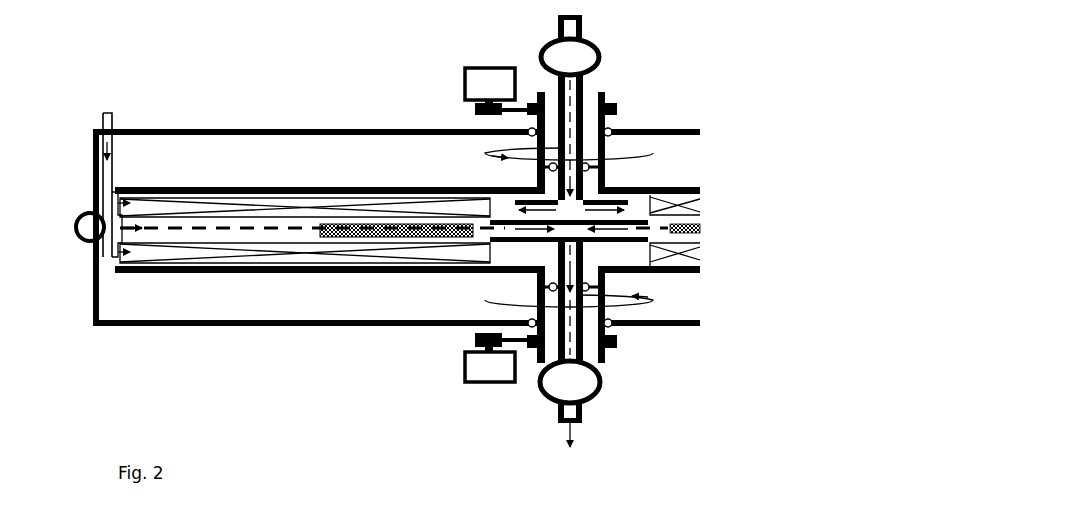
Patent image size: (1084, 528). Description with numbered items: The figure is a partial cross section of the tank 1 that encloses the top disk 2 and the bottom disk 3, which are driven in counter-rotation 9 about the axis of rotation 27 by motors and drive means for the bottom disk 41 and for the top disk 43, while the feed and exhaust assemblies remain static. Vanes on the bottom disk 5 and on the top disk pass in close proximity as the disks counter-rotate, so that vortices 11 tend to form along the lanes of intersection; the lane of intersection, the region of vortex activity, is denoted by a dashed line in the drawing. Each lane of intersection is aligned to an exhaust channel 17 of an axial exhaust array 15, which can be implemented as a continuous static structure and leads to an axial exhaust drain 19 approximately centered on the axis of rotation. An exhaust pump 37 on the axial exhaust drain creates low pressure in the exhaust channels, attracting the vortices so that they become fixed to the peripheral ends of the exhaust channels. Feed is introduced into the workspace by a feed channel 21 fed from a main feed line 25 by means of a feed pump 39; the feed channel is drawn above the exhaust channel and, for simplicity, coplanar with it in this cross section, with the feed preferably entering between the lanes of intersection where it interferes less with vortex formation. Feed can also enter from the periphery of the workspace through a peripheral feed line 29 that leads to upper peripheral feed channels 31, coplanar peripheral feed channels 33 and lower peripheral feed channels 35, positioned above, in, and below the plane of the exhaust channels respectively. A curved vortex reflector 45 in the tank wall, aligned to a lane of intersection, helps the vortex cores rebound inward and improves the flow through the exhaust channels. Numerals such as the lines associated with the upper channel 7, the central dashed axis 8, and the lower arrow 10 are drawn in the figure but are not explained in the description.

The tank 1 is at (236, 128).
The top disk 2 is at (163, 187).
The bottom disk 3 is at (155, 273).
The vanes on the bottom disk 5 is at (311, 268).
The upper channel 7 is at (306, 197).
The central axis 8 is at (310, 228).
The counter-rotation 9 is at (640, 152).
The rotation direction arrow 10 is at (630, 297).
The vortices 11 is at (387, 224).
The axial exhaust array 15 is at (590, 242).
The exhaust channel 17 is at (497, 234).
The axial exhaust drain 19 is at (537, 270).
The feed channel 21 is at (606, 192).
The main feed line 25 is at (572, 128).
The axis of rotation 27 is at (582, 347).
The peripheral feed line 29 is at (103, 172).
The upper peripheral feed channels 31 is at (112, 203).
The coplanar peripheral feed channels 33 is at (118, 226).
The lower peripheral feed channels 35 is at (112, 252).
The exhaust pump 37 is at (585, 380).
The feed pump 39 is at (580, 52).
The motors and drive means for the bottom disk 41 is at (477, 370).
The motors and drive means for the top disk 43 is at (483, 72).
The curved vortex reflector 45 is at (78, 228).